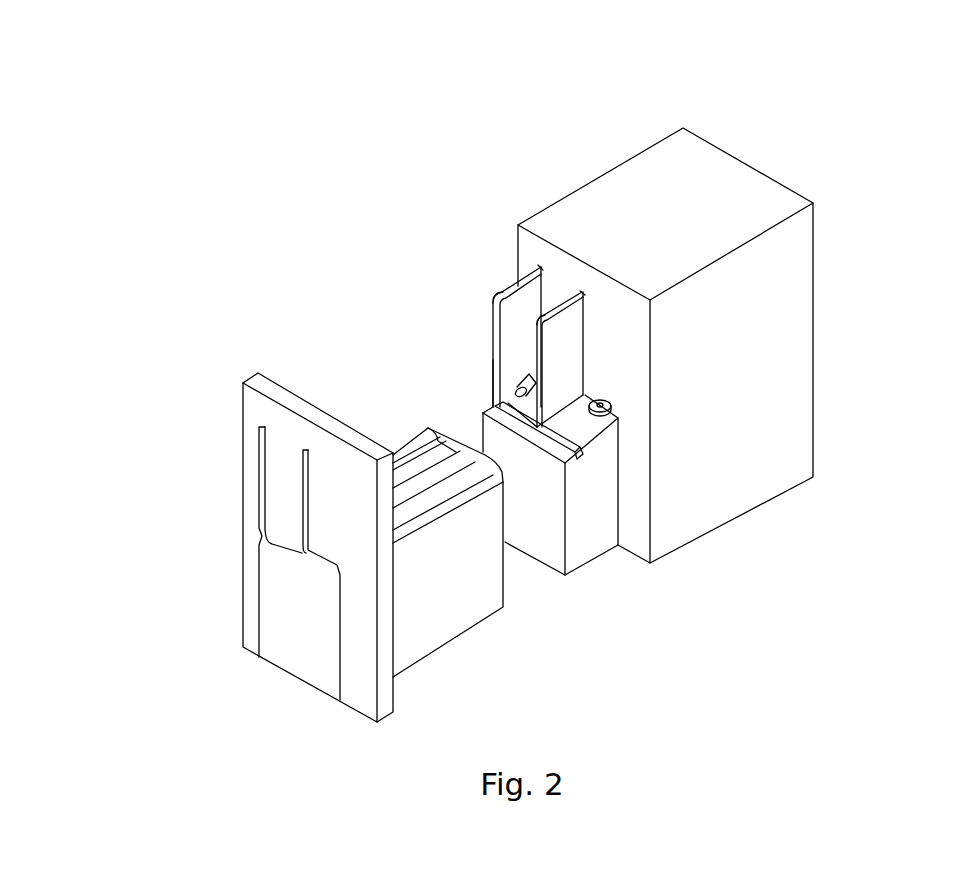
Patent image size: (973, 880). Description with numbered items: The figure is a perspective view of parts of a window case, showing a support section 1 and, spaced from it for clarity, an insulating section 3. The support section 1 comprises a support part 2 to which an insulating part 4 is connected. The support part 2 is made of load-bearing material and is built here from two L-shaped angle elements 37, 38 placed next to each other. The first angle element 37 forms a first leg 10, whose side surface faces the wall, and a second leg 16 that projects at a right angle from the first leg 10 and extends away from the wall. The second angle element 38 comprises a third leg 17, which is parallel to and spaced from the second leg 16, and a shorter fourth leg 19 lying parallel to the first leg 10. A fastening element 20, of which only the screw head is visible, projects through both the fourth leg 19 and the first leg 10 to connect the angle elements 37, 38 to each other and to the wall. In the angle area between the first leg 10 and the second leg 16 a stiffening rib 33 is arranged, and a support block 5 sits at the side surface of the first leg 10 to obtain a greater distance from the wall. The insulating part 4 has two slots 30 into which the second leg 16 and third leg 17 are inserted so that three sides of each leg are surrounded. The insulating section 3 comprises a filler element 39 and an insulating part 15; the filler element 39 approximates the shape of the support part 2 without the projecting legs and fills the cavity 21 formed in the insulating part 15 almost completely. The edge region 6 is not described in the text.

The support section 1 is at (629, 92).
The support part 2 is at (581, 441).
The insulating section 3 is at (280, 738).
The insulating part 4 is at (767, 308).
The support block 5 is at (583, 518).
The housing edge 6 is at (513, 247).
The first leg 10 is at (515, 398).
The insulating part 15 is at (250, 497).
The second leg 16 is at (497, 347).
The third leg 17 is at (567, 352).
The fourth leg 19 is at (582, 430).
The fastening element 20 is at (612, 405).
The cavity 21 is at (346, 702).
The slots 30 is at (538, 320).
The stiffening rib 33 is at (498, 377).
The first angle element 37 is at (511, 318).
The second angle element 38 is at (563, 327).
The filler element 39 is at (422, 588).